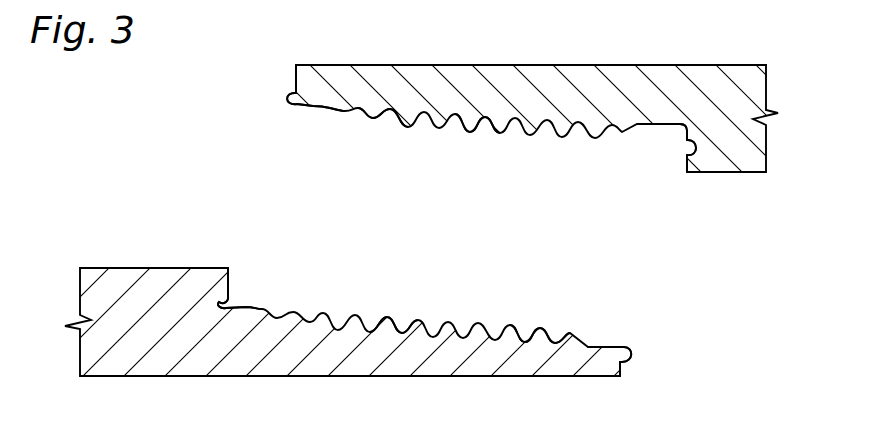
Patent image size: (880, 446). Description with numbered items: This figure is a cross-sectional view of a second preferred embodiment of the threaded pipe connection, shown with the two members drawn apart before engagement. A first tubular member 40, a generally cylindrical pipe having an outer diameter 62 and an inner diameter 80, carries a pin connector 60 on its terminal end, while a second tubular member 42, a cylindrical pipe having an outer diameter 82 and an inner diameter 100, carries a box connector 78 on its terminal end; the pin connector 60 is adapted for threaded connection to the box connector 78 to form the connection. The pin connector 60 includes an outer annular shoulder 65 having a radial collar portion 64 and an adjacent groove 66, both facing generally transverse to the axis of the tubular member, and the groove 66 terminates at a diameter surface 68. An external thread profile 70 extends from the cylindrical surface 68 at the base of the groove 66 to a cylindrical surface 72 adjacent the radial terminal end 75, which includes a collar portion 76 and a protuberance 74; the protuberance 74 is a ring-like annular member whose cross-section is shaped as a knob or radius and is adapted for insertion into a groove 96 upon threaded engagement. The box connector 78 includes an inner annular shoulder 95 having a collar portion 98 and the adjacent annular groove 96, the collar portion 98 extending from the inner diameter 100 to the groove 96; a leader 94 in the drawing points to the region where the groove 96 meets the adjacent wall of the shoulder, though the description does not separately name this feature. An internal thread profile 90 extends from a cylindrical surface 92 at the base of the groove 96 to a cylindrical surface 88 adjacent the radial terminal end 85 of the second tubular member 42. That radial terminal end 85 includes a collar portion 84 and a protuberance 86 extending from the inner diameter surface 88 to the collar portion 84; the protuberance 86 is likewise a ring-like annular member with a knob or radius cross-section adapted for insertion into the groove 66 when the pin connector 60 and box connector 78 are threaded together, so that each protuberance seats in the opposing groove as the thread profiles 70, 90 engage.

The first tubular member 40 is at (183, 363).
The second tubular member 42 is at (667, 82).
The pin connector 60 is at (542, 293).
The outer diameter 62 is at (147, 268).
The radial collar portion 64 is at (230, 270).
The outer annular shoulder 65 is at (240, 291).
The groove 66 is at (219, 298).
The diameter surface 68 is at (243, 304).
The external thread profile 70 is at (388, 315).
The cylindrical surface 72 is at (612, 346).
The protuberance 74 is at (634, 351).
The radial terminal end 75 is at (635, 363).
The collar portion 76 is at (623, 372).
The box connector 78 is at (402, 144).
The inner diameter 80 is at (330, 378).
The outer diameter 82 is at (432, 65).
The collar portion 84 is at (295, 65).
The radial terminal end 85 is at (292, 78).
The protuberance 86 is at (286, 97).
The cylindrical surface 88 is at (298, 107).
The internal thread profile 90 is at (470, 135).
The cylindrical surface 92 is at (650, 126).
The box corner 94 is at (686, 139).
The inner annular shoulder 95 is at (678, 157).
The annular groove 96 is at (711, 174).
The collar portion 98 is at (680, 163).
The inner diameter 100 is at (732, 173).